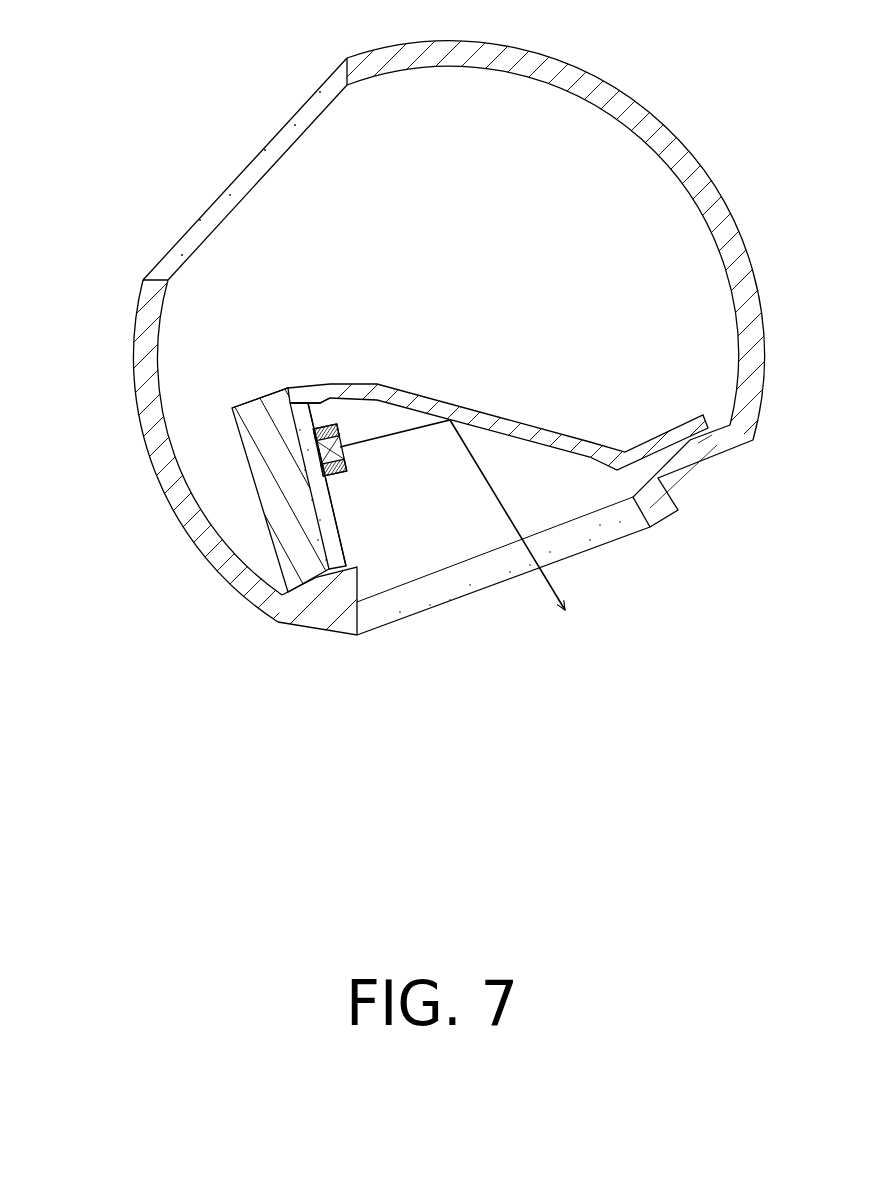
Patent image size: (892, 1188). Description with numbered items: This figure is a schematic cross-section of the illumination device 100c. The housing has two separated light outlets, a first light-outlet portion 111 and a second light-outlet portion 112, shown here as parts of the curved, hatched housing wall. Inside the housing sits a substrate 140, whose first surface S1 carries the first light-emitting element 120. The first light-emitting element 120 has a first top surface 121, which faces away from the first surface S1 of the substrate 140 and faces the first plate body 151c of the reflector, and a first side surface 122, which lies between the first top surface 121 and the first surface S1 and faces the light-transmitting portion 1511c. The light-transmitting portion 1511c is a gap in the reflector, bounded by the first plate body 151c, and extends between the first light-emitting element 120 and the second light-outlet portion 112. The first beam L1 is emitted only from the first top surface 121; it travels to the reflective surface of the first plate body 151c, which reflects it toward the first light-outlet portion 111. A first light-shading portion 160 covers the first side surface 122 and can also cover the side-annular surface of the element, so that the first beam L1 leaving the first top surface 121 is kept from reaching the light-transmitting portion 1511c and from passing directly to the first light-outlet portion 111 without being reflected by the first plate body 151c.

The illumination device 100c is at (93, 40).
The second light-outlet portion 112 is at (263, 157).
The first light-outlet portion 111 is at (628, 522).
The substrate 140 is at (325, 615).
The first plate body 151c is at (446, 500).
The light-transmitting portion 1511c is at (316, 388).
The first light-emitting element 120 is at (255, 561).
The first top surface 121 is at (251, 549).
The first side surface 122 is at (290, 538).
The first light-shading portion 160 is at (318, 441).
The first surface S1 is at (338, 516).
The first beam L1 is at (542, 596).